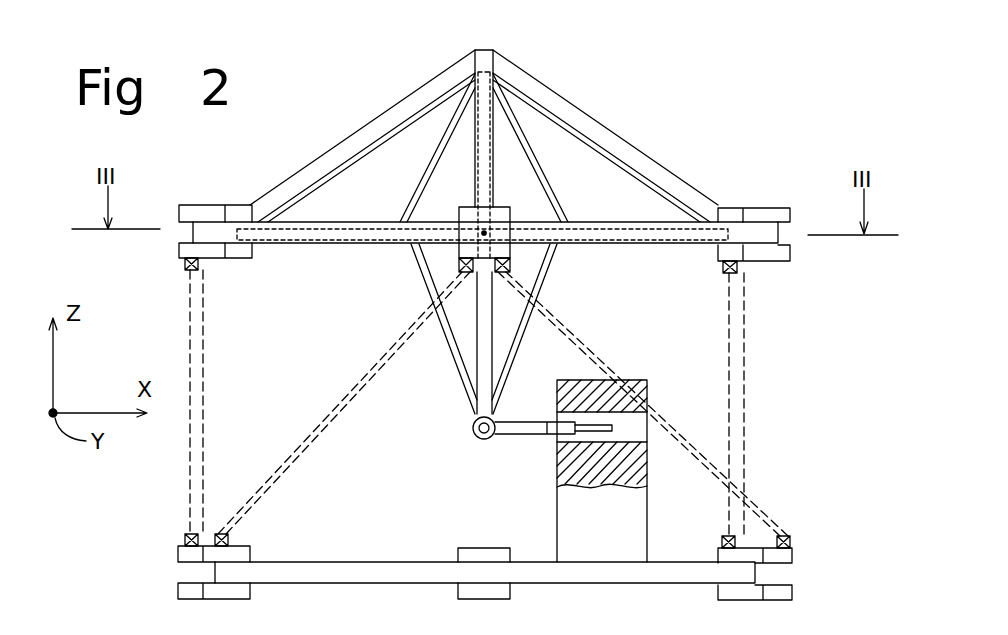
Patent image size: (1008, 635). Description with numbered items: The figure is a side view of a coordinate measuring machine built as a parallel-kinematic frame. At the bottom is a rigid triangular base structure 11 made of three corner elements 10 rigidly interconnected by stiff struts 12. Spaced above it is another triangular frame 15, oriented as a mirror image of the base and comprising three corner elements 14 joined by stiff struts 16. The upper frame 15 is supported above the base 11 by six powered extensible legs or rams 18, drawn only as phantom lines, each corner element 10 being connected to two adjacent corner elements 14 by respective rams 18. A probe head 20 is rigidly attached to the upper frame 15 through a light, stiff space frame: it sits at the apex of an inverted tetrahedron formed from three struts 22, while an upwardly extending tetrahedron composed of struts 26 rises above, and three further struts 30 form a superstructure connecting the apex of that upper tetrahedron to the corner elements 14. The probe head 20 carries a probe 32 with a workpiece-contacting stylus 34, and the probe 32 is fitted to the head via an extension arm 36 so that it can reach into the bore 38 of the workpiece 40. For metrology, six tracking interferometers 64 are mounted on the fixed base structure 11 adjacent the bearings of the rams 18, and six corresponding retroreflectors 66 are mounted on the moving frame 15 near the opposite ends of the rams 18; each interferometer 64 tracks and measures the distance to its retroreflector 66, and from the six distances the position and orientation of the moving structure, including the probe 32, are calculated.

The corner element 10 is at (178, 576).
The triangular base structure 11 is at (392, 590).
The stiff strut 12 is at (347, 558).
The corner element 14 is at (203, 204).
The triangular frame 15 is at (672, 136).
The stiff strut 16 is at (278, 245).
The powered extensible leg 18 is at (200, 442).
The probe head 20 is at (474, 424).
The strut 22 is at (405, 261).
The strut 26 is at (423, 158).
The strut 30 is at (397, 103).
The probe 32 is at (557, 442).
The workpiece-contacting stylus 34 is at (613, 390).
The extension arm 36 is at (508, 434).
The bore 38 is at (640, 414).
The workpiece 40 is at (630, 518).
The tracking interferometer 64 is at (217, 534).
The retroreflector 66 is at (185, 262).